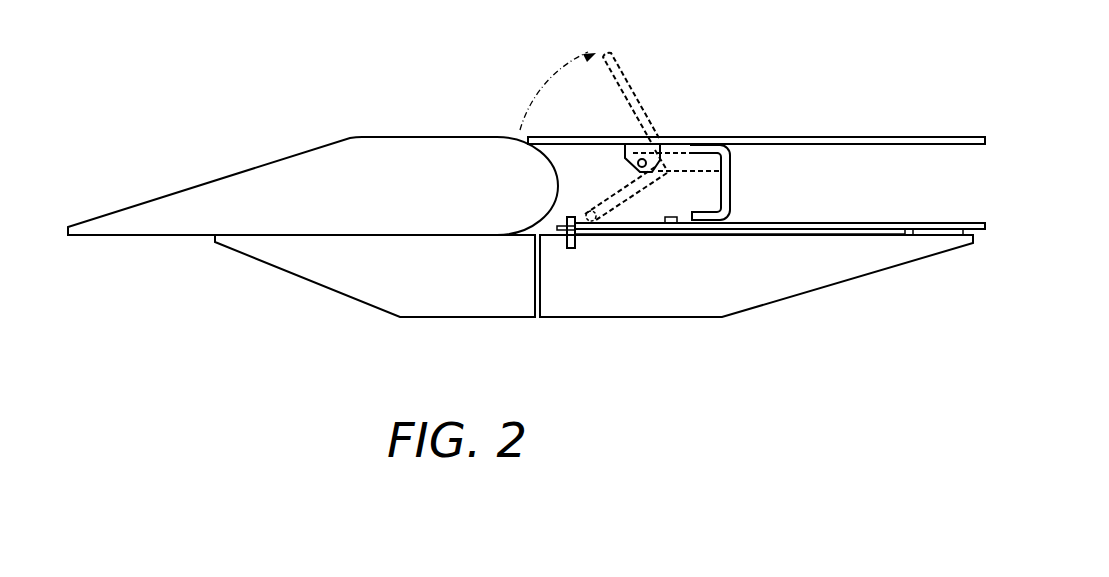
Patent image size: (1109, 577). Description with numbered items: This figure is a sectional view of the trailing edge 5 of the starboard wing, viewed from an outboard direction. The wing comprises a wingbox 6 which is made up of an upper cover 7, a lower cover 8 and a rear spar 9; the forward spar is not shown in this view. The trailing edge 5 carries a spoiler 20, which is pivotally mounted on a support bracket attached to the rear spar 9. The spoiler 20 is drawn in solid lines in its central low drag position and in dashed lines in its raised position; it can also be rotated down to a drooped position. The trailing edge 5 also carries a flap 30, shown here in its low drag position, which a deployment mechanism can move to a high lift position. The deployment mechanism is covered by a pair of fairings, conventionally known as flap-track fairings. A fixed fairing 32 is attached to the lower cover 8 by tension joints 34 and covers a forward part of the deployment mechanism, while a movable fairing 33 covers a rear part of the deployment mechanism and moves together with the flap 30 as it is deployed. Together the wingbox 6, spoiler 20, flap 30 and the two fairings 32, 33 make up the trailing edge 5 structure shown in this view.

The trailing edge 5 is at (448, 108).
The wingbox 6 is at (902, 114).
The upper cover 7 is at (777, 137).
The lower cover 8 is at (842, 226).
The rear spar 9 is at (748, 181).
The spoiler 20 is at (593, 138).
The flap 30 is at (260, 192).
The fixed fairing 32 is at (632, 298).
The movable fairing 33 is at (465, 278).
The tension joints 34 is at (703, 233).